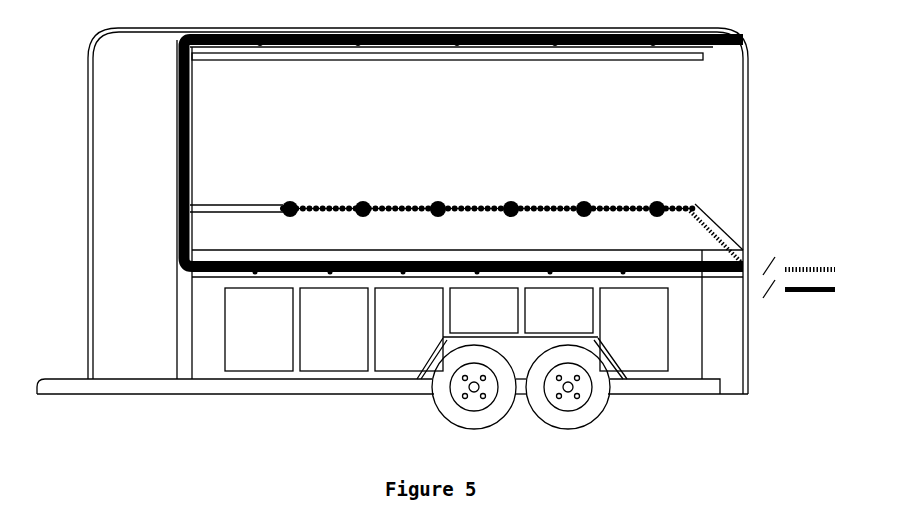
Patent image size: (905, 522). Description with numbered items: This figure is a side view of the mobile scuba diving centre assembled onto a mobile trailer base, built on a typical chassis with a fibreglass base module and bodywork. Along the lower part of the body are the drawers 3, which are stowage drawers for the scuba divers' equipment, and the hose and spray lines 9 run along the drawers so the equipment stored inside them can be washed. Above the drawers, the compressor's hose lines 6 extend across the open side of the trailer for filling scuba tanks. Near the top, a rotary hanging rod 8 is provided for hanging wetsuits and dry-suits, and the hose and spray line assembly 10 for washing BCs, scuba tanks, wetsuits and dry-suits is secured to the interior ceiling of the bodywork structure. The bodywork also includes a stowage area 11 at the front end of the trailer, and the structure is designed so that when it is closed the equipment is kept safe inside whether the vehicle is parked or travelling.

The drawers 3 is at (257, 353).
The compressor's hose lines 6 is at (393, 205).
The hanging rod for wetsuits and dry-suits 8 is at (505, 57).
The spray lines to wash the drawers 9 is at (667, 268).
The spray lines to wash wetsuits, dry-suits, BCs and scuba tanks 10 is at (320, 63).
The stowage area 11 is at (113, 135).